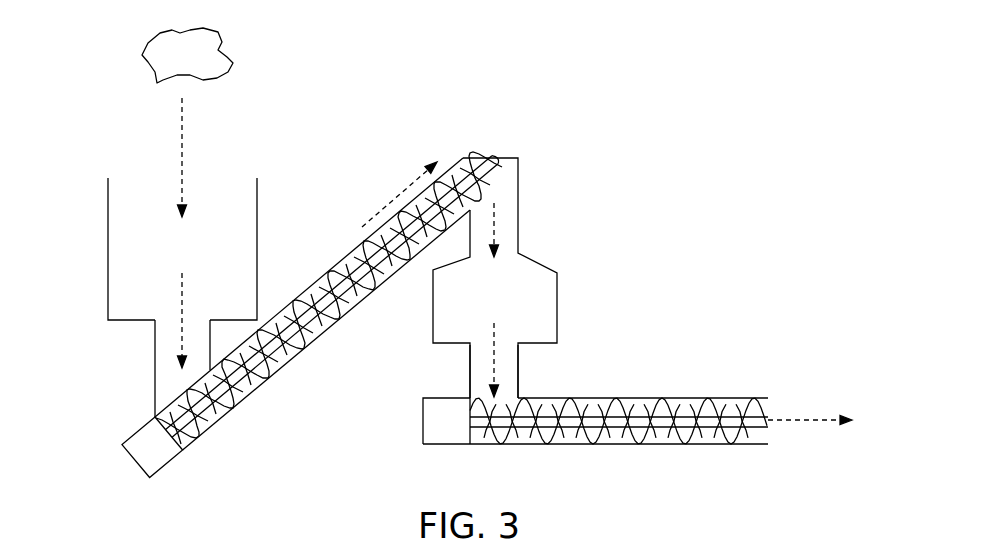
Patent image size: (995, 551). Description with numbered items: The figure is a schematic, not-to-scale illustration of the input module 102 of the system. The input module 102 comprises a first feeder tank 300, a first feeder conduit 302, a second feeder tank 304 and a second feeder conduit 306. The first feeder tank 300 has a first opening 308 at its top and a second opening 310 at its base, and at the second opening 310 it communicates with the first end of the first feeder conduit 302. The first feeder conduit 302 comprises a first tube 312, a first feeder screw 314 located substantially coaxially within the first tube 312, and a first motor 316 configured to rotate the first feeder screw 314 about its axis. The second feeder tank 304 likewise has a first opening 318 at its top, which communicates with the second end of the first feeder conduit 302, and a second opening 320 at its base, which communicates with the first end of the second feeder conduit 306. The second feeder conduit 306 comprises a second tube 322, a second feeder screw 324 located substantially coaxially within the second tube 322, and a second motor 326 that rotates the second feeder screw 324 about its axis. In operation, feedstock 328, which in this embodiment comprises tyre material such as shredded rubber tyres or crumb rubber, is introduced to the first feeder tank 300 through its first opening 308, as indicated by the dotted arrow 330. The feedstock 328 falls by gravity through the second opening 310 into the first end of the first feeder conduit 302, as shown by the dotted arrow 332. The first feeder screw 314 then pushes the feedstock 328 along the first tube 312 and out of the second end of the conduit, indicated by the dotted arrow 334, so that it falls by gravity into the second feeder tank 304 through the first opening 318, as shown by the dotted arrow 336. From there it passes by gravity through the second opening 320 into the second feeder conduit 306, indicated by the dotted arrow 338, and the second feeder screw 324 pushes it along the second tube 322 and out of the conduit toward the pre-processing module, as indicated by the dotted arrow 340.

The input module 102 is at (73, 168).
The first feeder tank 300 is at (262, 185).
The first feeder conduit 302 is at (303, 271).
The second feeder tank 304 is at (557, 305).
The second feeder conduit 306 is at (652, 377).
The first opening 308 is at (213, 178).
The second opening 310 is at (167, 327).
The first tube 312 is at (291, 367).
The first feeder screw 314 is at (336, 320).
The first motor 316 is at (145, 452).
The first opening 318 is at (523, 275).
The second opening 320 is at (503, 352).
The second tube 322 is at (613, 445).
The second feeder screw 324 is at (695, 432).
The second motor 326 is at (432, 417).
The feedstock 328 is at (213, 40).
The dotted arrow 330 is at (180, 152).
The dotted arrow 332 is at (184, 293).
The dotted arrow 334 is at (398, 195).
The dotted arrow 336 is at (495, 212).
The dotted arrow 338 is at (498, 335).
The dotted arrow 340 is at (787, 417).